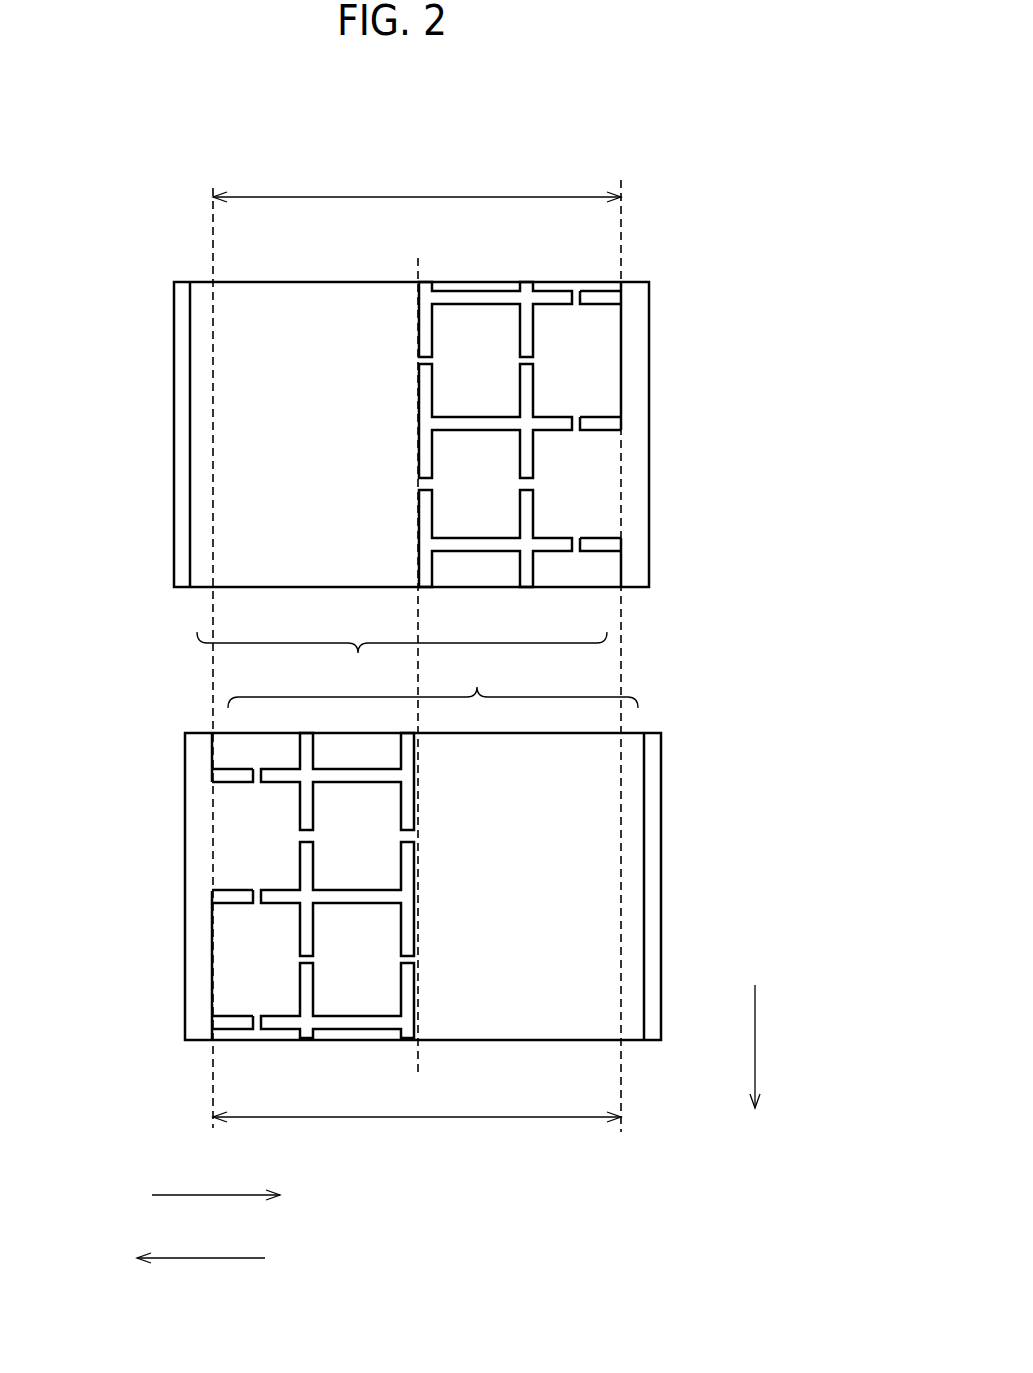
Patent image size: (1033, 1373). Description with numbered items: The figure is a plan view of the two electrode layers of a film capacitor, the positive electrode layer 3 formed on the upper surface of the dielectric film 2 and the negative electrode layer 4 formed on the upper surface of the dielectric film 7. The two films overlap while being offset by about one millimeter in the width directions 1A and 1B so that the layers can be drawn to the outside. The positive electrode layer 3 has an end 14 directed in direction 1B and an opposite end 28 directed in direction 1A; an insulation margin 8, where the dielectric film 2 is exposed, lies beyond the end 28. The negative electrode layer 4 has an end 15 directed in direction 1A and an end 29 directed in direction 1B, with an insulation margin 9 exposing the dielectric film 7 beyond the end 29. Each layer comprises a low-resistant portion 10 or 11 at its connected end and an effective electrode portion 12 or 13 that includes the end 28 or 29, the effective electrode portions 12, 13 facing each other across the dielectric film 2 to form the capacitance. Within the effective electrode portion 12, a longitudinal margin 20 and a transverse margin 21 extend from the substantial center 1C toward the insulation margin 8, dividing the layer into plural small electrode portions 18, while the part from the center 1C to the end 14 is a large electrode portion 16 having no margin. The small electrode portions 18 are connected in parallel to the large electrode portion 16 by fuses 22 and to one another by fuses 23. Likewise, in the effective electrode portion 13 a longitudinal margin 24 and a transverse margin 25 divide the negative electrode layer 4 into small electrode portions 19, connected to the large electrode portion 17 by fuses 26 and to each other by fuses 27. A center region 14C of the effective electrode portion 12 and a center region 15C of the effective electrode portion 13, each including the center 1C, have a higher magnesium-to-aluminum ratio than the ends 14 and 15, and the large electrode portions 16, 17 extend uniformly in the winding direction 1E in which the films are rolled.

The dielectric film 2 is at (641, 440).
The positive electrode layer 3 is at (282, 281).
The negative electrode layer 4 is at (577, 1040).
The dielectric film 7 is at (200, 858).
The insulation margin 8 is at (642, 333).
The insulation margin 9 is at (195, 985).
The low-resistant portion 10 is at (184, 324).
The low-resistant portion 11 is at (653, 848).
The effective electrode portion 12 is at (417, 185).
The effective electrode portion 13 is at (417, 1135).
The end 14 is at (176, 403).
The end 15 is at (662, 933).
The large electrode portion 16 is at (353, 303).
The large electrode portion 17 is at (512, 1023).
The small electrode portions 18 is at (498, 407).
The small electrode portions 19 is at (337, 915).
The longitudinal margin 20 is at (528, 377).
The transverse margin 21 is at (458, 420).
The fuses 22 is at (421, 481).
The fuses 23 is at (528, 357).
The longitudinal margin 24 is at (407, 938).
The transverse margin 25 is at (327, 893).
The fuses 26 is at (412, 838).
The fuses 27 is at (307, 968).
The end 28 is at (623, 507).
The end 29 is at (212, 753).
The center region 14C is at (402, 660).
The center region 15C is at (433, 684).
The width direction 1A is at (223, 1195).
The width direction 1B is at (215, 1258).
The center 1C is at (417, 1094).
The winding direction 1E is at (757, 1060).